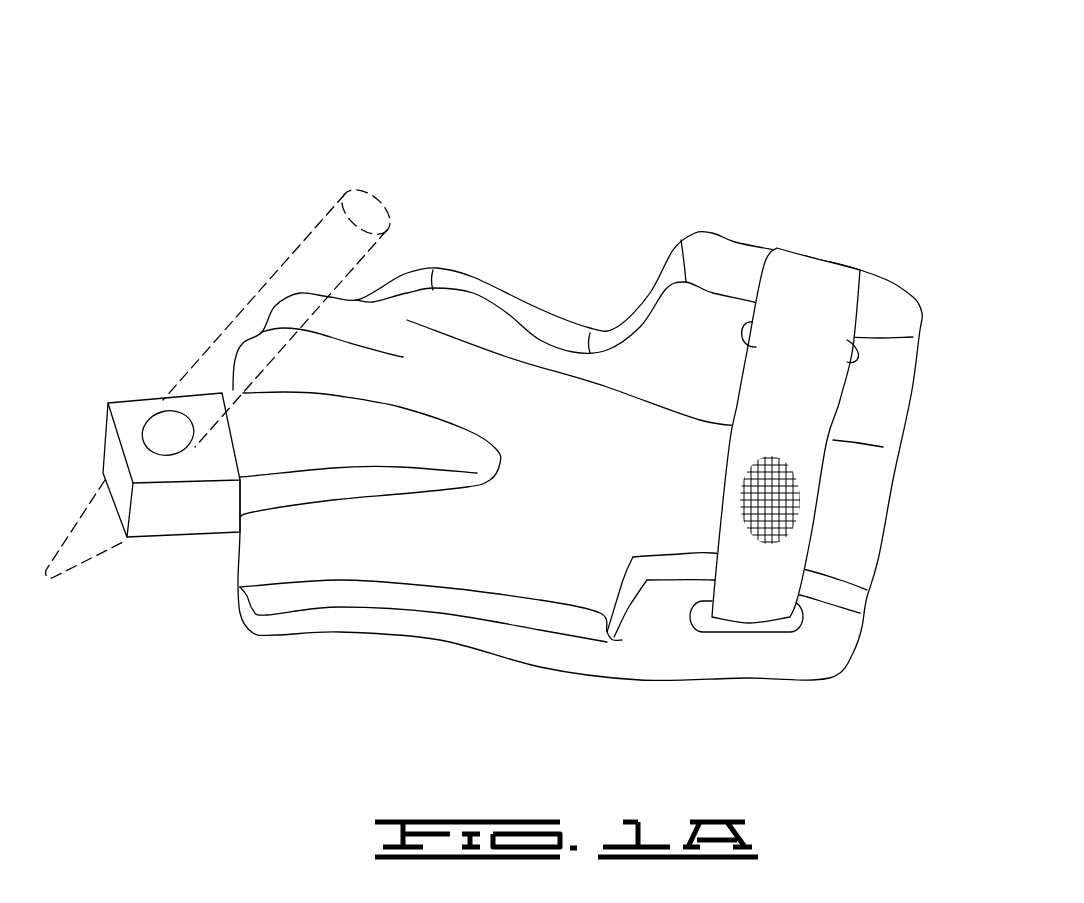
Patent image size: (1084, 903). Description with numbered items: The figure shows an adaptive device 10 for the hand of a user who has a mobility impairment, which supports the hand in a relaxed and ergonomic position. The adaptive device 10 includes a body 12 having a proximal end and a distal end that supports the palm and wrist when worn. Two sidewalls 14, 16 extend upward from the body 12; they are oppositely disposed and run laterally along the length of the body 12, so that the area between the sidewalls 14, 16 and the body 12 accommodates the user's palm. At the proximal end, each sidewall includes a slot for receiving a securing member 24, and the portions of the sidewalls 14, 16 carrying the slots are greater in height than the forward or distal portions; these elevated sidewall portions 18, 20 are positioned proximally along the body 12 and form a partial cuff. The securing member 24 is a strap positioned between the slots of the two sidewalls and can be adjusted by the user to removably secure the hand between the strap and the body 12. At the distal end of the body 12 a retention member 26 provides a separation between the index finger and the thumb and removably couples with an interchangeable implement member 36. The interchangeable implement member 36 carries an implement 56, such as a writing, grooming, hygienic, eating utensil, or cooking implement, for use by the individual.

The adaptive device 10 is at (523, 87).
The body 12 is at (607, 509).
The sidewall 14 is at (487, 608).
The sidewall 16 is at (527, 313).
The elevated sidewall portion 18 is at (843, 640).
The elevated sidewall portion 20 is at (877, 300).
The securing member 24 is at (823, 480).
The retention member 26 is at (310, 449).
The interchangeable implement member 36 is at (135, 403).
The implement 56 is at (307, 233).